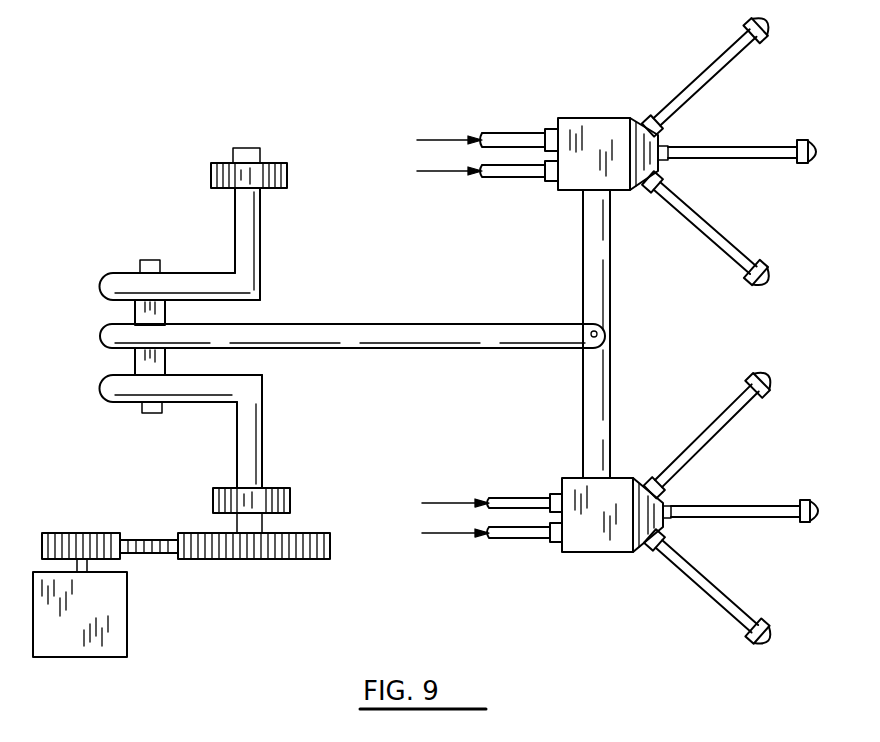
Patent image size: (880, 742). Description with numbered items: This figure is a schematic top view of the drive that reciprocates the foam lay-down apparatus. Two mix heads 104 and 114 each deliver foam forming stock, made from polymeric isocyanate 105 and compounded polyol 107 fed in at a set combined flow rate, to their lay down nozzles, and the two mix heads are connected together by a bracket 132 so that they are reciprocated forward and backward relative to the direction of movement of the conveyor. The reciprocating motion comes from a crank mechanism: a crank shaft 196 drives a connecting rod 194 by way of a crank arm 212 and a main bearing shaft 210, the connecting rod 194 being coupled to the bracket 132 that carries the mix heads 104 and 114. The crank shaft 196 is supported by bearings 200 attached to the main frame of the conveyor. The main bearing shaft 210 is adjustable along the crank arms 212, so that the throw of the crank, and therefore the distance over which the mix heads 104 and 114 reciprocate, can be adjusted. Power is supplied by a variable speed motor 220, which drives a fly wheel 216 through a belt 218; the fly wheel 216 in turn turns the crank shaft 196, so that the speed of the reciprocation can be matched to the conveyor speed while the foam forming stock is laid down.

The mix head 104 is at (570, 118).
The polymeric isocyanate 105 is at (432, 140).
The compounded polyol 107 is at (435, 172).
The mix head 114 is at (575, 490).
The bracket 132 is at (590, 255).
The connecting rod 194 is at (500, 325).
The crank shaft 196 is at (262, 262).
The bearings 200 is at (285, 172).
The main bearing shaft 210 is at (142, 318).
The crank arm 212 is at (188, 283).
The fly wheel 216 is at (280, 558).
The belt 218 is at (152, 540).
The variable speed motor 220 is at (100, 590).